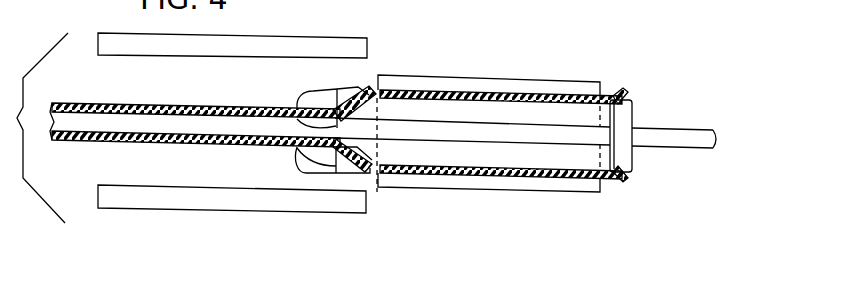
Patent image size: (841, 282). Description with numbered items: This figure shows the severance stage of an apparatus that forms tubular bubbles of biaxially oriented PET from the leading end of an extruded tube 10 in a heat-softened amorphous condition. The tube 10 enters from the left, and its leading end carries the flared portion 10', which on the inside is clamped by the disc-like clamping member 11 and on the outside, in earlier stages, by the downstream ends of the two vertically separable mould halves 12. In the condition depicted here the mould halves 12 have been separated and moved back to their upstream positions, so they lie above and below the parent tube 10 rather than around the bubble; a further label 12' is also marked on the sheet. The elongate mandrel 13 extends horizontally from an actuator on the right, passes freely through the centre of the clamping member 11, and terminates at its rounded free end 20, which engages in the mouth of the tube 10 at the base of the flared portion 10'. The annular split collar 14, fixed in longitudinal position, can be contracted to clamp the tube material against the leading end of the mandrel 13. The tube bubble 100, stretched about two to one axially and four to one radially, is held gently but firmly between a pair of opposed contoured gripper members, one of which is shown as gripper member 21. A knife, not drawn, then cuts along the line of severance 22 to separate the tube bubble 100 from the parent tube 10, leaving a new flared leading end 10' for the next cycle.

The extruded tube 10 is at (195, 140).
The flared portion 10' is at (312, 163).
The clamping member 11 is at (624, 113).
The mould halves 12 is at (317, 141).
The support plate 12' is at (597, 13).
The mandrel 13 is at (687, 138).
The split collar 14 is at (313, 98).
The rounded free end 20 is at (288, 112).
The gripper member 21 is at (530, 185).
The line of severance 22 is at (373, 88).
The tube bubble 100 is at (447, 201).